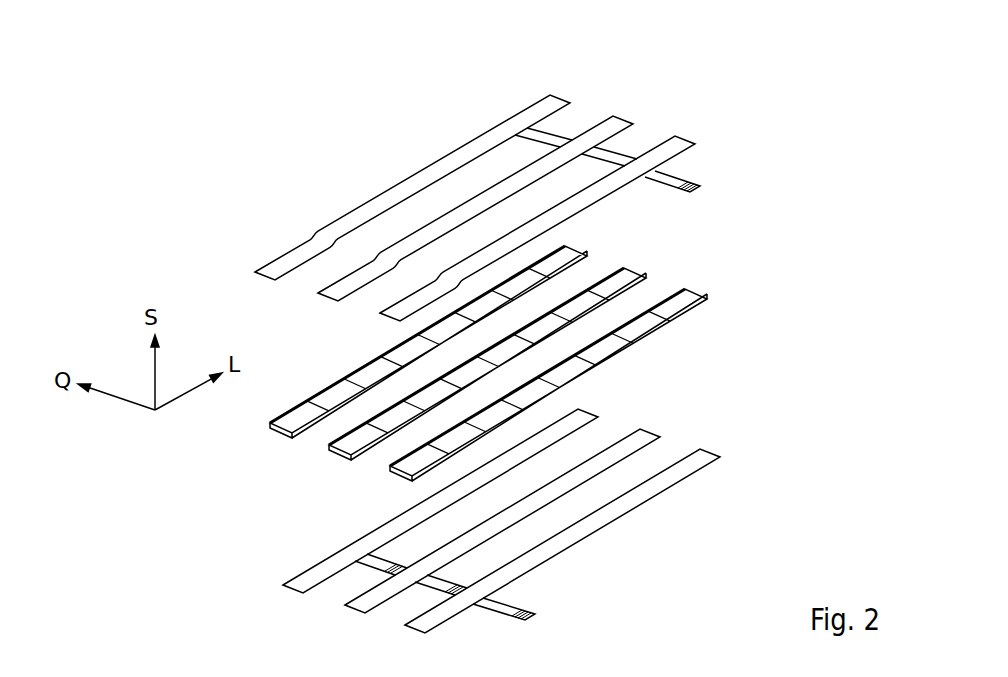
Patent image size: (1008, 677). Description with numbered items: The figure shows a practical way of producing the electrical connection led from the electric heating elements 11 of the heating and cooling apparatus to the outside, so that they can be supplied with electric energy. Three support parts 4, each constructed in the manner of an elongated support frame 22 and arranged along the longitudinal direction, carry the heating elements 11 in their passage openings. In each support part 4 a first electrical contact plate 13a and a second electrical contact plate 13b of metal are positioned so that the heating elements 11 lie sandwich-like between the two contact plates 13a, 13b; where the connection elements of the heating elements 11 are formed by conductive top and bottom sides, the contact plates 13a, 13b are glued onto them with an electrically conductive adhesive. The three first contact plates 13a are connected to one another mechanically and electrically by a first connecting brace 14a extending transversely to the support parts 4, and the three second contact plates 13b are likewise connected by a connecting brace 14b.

The support part 4 is at (433, 374).
The support frame 22 is at (433, 374).
The heating elements 11 is at (615, 282).
The first electrical contact plate 13a is at (551, 97).
The second electrical contact plate 13b is at (637, 435).
The first connecting brace 14a is at (679, 176).
The connecting brace 14b is at (500, 602).